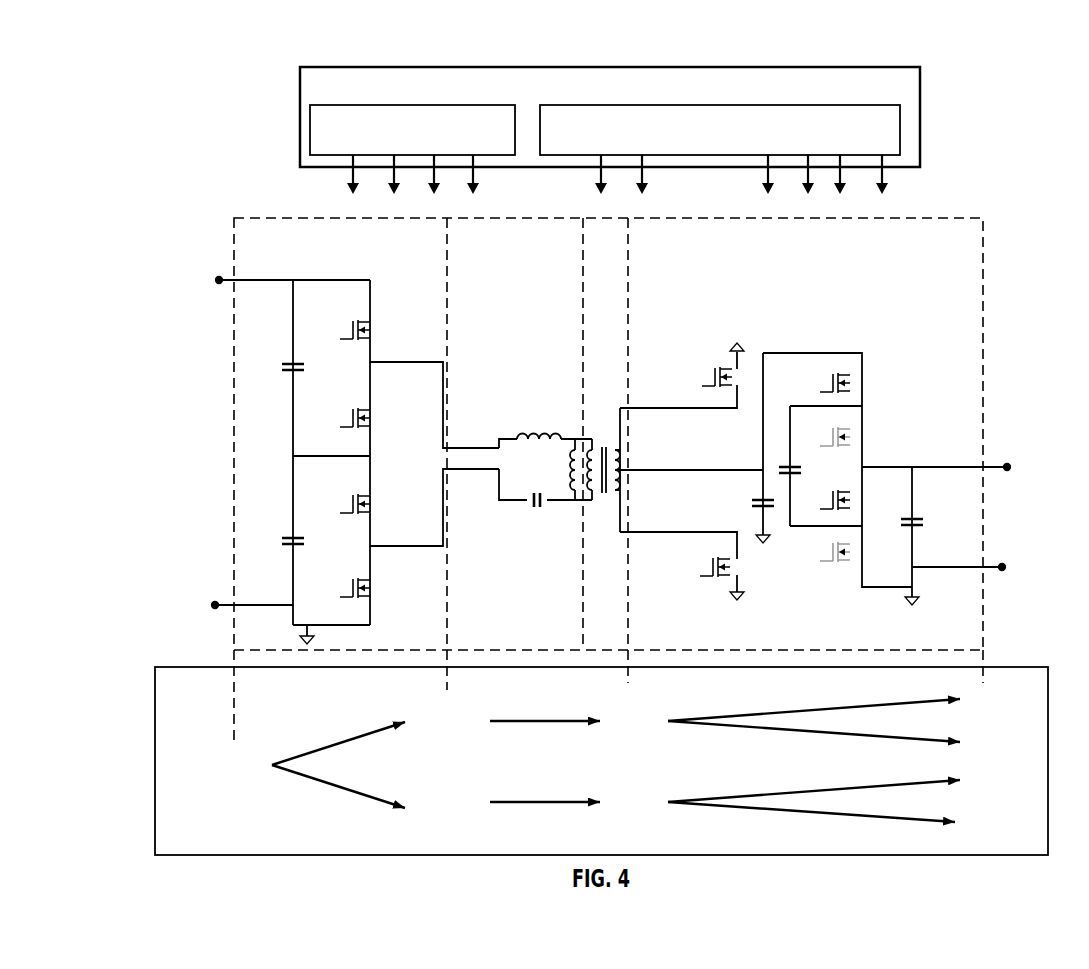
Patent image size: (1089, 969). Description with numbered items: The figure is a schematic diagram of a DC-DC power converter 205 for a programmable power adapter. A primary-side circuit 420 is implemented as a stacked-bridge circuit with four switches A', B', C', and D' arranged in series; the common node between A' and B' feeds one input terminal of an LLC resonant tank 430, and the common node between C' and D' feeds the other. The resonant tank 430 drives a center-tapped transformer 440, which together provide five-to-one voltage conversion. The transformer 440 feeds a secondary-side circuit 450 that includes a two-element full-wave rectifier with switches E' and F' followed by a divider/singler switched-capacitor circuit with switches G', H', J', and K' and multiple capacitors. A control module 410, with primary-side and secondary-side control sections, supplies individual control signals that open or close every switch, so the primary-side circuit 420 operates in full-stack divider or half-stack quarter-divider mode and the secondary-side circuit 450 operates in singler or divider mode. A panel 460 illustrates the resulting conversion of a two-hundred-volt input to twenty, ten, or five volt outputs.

The power converter 205 is at (183, 168).
The control module 410 is at (918, 122).
The primary-side circuit 420 is at (441, 639).
The LLC resonant tank 430 is at (573, 639).
The center-tapped transformer 440 is at (623, 639).
The secondary-side circuit 450 is at (977, 639).
The panel 460 is at (601, 761).